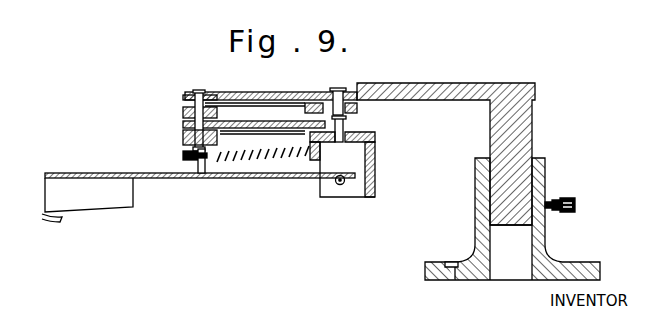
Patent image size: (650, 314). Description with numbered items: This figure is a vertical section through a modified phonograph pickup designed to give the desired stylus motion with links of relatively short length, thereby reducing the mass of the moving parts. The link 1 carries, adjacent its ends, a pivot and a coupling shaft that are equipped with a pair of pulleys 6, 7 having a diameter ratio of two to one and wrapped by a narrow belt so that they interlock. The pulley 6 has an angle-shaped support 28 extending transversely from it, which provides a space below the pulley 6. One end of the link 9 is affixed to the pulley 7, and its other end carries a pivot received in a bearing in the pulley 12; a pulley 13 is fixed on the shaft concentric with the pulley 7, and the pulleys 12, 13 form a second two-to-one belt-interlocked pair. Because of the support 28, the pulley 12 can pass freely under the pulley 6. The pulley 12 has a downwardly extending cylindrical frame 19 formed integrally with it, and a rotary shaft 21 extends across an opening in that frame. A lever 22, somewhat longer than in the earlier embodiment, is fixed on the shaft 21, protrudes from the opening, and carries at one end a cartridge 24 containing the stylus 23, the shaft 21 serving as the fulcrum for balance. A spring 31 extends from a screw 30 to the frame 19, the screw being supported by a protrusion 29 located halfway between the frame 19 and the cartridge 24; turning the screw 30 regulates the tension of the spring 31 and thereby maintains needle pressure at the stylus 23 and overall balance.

The link 1 is at (287, 92).
The pulley 6 is at (315, 103).
The pulley 7 is at (183, 112).
The link 9 is at (242, 121).
The pulley 12 is at (375, 144).
The pulley 13 is at (183, 135).
The frame 19 is at (375, 187).
The rotary shaft 21 is at (341, 185).
The lever 22 is at (188, 179).
The stylus 23 is at (58, 220).
The cartridge 24 is at (110, 208).
The angle-shaped support 28 is at (441, 83).
The protrusion 29 is at (205, 178).
The screw 30 is at (183, 155).
The spring 31 is at (272, 162).